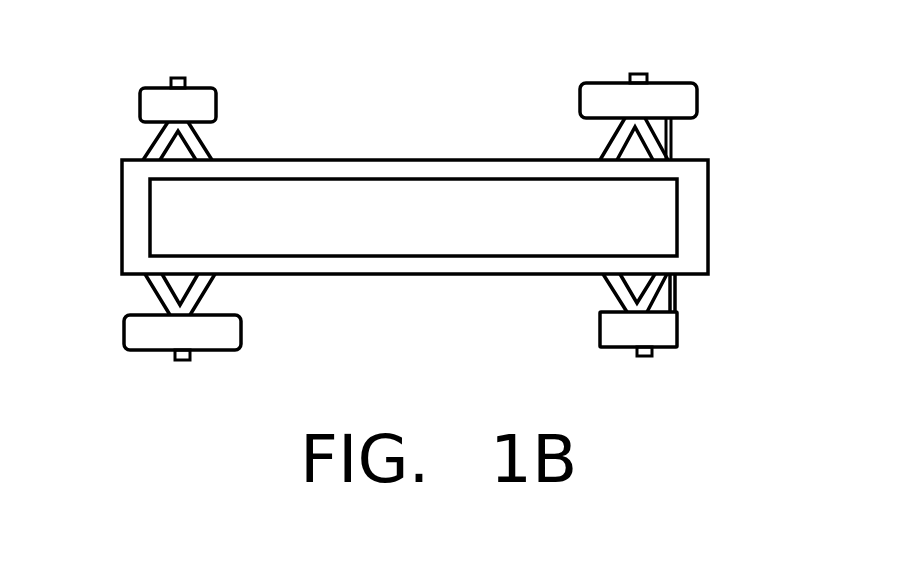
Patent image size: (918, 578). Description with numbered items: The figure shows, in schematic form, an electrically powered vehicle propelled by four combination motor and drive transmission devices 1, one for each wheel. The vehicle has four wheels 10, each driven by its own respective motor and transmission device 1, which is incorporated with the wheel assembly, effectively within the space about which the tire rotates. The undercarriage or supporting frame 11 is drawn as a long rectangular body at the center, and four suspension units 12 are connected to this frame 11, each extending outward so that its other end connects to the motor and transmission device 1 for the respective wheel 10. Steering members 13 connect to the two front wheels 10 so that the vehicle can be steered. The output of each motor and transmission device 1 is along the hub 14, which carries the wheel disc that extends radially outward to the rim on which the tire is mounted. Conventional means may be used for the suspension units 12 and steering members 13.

The combination motor and drive transmission device 1 is at (216, 103).
The wheel 10 is at (697, 97).
The supporting frame 11 is at (711, 256).
The suspension unit 12 is at (672, 126).
The steering member 13 is at (672, 148).
The hub 14 is at (640, 74).